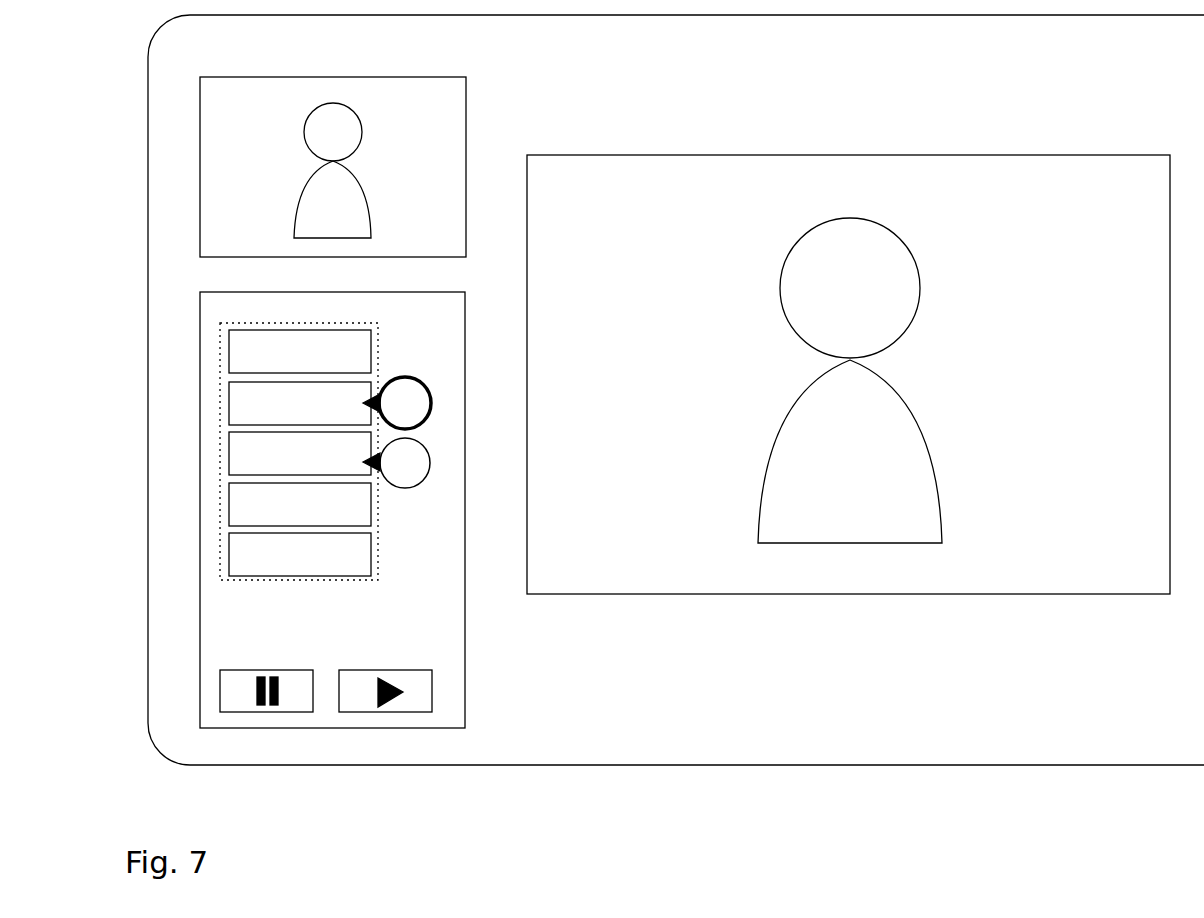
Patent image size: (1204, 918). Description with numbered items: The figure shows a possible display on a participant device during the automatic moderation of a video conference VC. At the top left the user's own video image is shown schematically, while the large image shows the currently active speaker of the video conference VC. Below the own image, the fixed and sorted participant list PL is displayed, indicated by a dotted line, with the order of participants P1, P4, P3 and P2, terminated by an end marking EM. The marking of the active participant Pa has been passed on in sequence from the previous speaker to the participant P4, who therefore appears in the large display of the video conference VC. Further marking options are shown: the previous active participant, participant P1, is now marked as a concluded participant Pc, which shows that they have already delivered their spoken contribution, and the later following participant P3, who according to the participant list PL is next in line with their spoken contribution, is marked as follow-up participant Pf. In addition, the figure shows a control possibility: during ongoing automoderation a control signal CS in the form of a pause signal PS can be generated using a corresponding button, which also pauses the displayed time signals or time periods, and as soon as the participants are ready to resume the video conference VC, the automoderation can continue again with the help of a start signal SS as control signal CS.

The video conference VC is at (148, 240).
The participant list PL is at (453, 328).
The concluded participant Pc is at (222, 358).
The participant P1 is at (300, 351).
The participant P4 is at (699, 374).
The participant P3 is at (300, 453).
The participant P2 is at (300, 504).
The end marking EM is at (300, 554).
The active participant Pa is at (419, 417).
The follow-up participant Pf is at (417, 476).
The pause signal PS is at (253, 712).
The start signal SS is at (385, 712).
The control signal CS is at (326, 756).